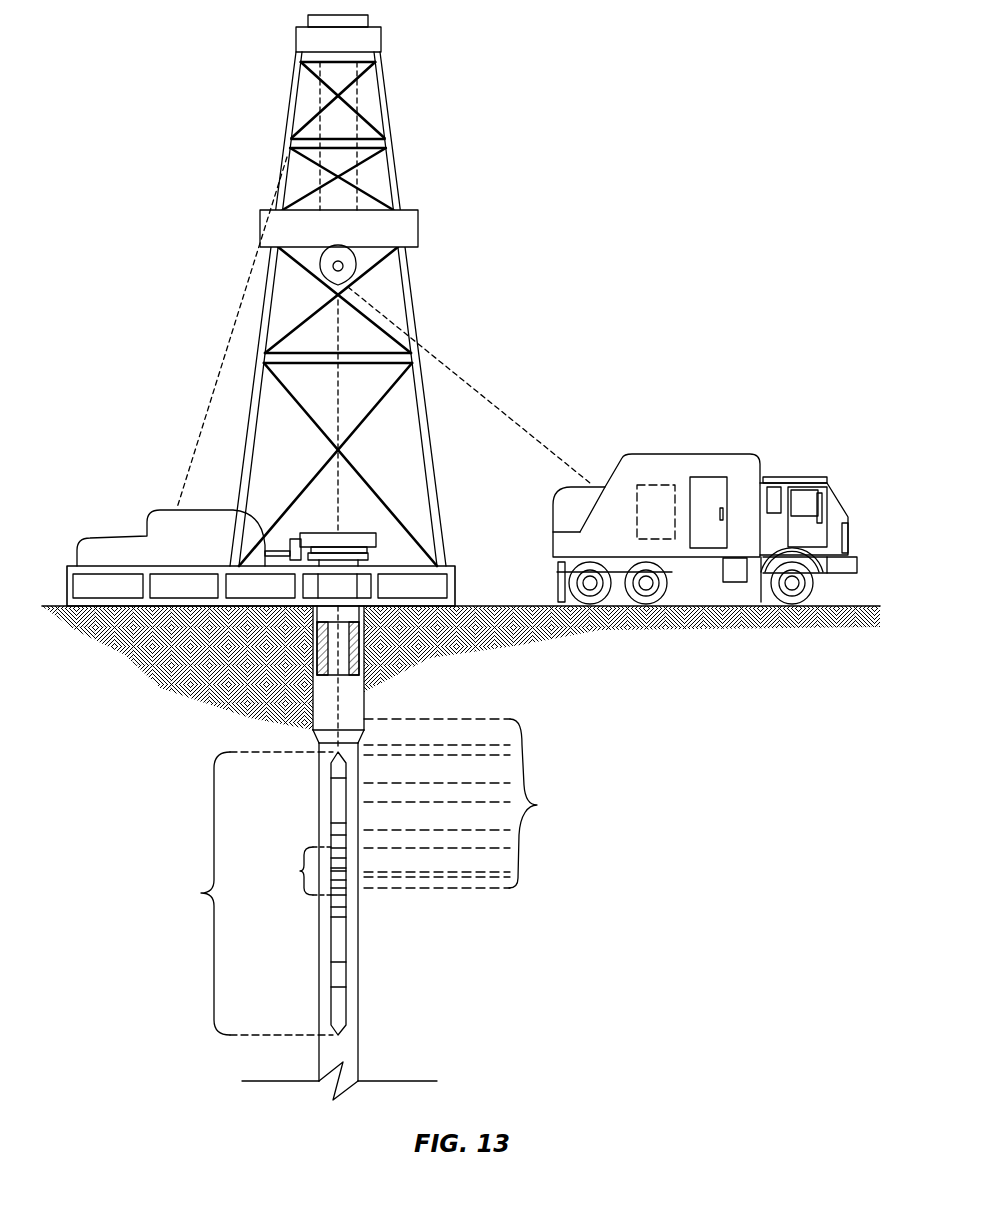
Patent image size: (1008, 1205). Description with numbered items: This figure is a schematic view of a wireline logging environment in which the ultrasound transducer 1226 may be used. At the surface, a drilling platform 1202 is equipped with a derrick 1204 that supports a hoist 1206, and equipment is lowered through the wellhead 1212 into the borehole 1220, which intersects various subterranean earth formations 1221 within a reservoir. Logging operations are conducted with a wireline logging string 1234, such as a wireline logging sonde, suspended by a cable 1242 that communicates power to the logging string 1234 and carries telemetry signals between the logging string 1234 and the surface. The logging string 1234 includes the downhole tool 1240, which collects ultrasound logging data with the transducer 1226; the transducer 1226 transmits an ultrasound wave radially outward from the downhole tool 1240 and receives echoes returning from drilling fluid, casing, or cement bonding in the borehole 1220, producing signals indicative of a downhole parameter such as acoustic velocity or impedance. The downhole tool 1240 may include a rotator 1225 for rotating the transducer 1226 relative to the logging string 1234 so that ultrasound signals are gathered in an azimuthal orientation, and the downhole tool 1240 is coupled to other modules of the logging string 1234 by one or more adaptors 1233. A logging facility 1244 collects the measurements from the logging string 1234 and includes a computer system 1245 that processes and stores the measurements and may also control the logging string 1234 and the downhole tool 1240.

The drilling platform 1202 is at (457, 590).
The derrick 1204 is at (428, 306).
The hoist 1206 is at (318, 257).
The wellhead 1212 is at (376, 540).
The borehole 1220 is at (320, 767).
The subterranean earth formations 1221 is at (475, 803).
The rotator 1225 is at (338, 871).
The transducer 1226 is at (338, 888).
The adaptors 1233 is at (337, 835).
The wireline logging string 1234 is at (291, 893).
The downhole tool 1240 is at (287, 871).
The cable 1242 is at (478, 397).
The logging facility 1244 is at (702, 454).
The computer system 1245 is at (655, 484).